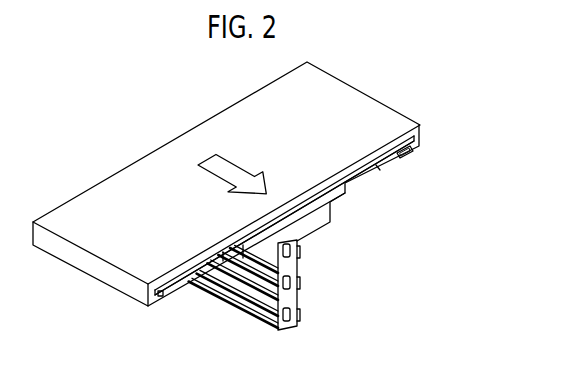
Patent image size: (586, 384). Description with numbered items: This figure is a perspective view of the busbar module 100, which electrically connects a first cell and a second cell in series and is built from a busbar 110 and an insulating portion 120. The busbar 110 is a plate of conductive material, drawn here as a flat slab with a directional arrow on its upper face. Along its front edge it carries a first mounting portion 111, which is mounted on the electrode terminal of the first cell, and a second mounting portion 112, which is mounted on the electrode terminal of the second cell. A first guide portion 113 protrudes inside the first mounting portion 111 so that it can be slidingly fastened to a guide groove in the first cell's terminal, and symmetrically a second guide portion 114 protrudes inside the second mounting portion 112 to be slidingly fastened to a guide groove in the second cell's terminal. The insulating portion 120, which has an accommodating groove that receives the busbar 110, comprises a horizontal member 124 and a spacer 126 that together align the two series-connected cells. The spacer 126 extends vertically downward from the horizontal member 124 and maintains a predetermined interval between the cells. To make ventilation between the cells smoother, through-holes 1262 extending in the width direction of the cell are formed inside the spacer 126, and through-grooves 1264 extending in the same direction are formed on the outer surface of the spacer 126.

The busbar module 100 is at (130, 112).
The busbar 110 is at (421, 137).
The first mounting portion 111 is at (181, 287).
The second mounting portion 112 is at (378, 167).
The first guide portion 113 is at (162, 297).
The second guide portion 114 is at (407, 155).
The insulating portion 120 is at (420, 128).
The horizontal member 124 is at (322, 214).
The spacer 126 is at (299, 257).
The through-holes 1262 is at (299, 276).
The through-grooves 1264 is at (299, 308).